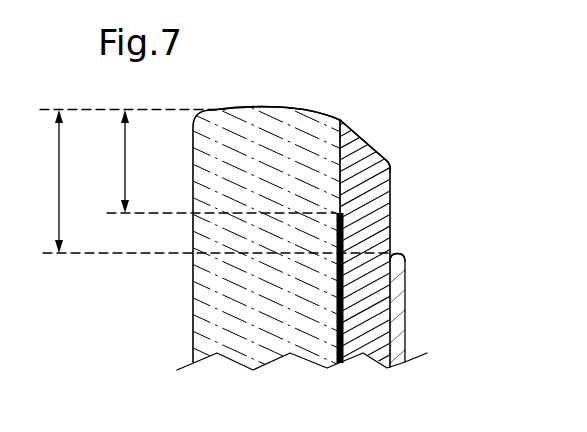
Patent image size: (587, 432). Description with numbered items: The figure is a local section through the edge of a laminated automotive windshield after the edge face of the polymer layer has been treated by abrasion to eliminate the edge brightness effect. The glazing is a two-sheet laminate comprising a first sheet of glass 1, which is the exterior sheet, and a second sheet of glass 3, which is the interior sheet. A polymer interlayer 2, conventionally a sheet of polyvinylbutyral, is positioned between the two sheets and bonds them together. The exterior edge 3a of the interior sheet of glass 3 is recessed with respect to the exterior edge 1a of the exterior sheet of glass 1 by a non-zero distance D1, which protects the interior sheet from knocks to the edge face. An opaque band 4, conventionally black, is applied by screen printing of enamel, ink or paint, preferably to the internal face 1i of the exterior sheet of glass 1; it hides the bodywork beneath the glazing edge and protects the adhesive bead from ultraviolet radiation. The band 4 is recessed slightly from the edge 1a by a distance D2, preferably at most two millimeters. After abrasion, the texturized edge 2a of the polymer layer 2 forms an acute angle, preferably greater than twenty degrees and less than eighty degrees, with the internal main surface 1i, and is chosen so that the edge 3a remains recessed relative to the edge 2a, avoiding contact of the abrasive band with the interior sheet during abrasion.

The first sheet of glass 1 is at (223, 305).
The exterior edge of the exterior sheet of glass 1a is at (275, 96).
The internal face of the exterior sheet of glass 1i is at (327, 150).
The polymer interlayer 2 is at (348, 317).
The texturized edge of the polymer layer 2a is at (332, 178).
The second sheet of glass 3 is at (393, 291).
The exterior edge of the interior sheet of glass 3a is at (400, 240).
The opaque band 4 is at (348, 317).
The recess distance of the interior sheet D1 is at (43, 181).
The recess distance of the opaque band D2 is at (107, 161).